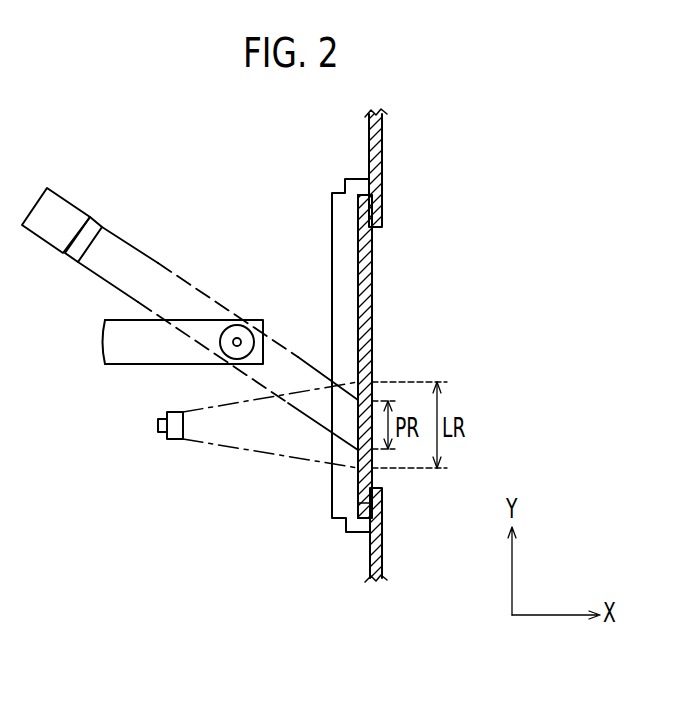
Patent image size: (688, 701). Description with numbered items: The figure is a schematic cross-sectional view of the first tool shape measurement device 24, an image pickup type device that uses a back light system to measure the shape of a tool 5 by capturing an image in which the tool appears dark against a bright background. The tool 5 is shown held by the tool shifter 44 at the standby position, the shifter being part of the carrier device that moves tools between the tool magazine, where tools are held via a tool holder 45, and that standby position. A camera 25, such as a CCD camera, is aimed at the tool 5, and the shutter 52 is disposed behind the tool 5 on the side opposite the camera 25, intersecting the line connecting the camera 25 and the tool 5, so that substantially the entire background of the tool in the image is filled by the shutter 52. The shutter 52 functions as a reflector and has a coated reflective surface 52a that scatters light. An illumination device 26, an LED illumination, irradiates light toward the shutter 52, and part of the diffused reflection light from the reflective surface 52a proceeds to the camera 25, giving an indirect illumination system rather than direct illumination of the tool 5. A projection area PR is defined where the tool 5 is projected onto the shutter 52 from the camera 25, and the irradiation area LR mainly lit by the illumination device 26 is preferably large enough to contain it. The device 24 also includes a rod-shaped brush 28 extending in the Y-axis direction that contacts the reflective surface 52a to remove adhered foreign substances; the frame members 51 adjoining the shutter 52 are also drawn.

The tool 5 is at (237, 338).
The tool shape measurement device 24 is at (147, 158).
The camera 25 is at (53, 210).
The illumination device 26 is at (175, 437).
The brush 28 is at (342, 203).
The tool shifter 44 is at (120, 357).
The tool holder 45 is at (224, 344).
The frame member 51 is at (377, 124).
The shutter 52 is at (365, 257).
The reflective surface 52a is at (362, 293).